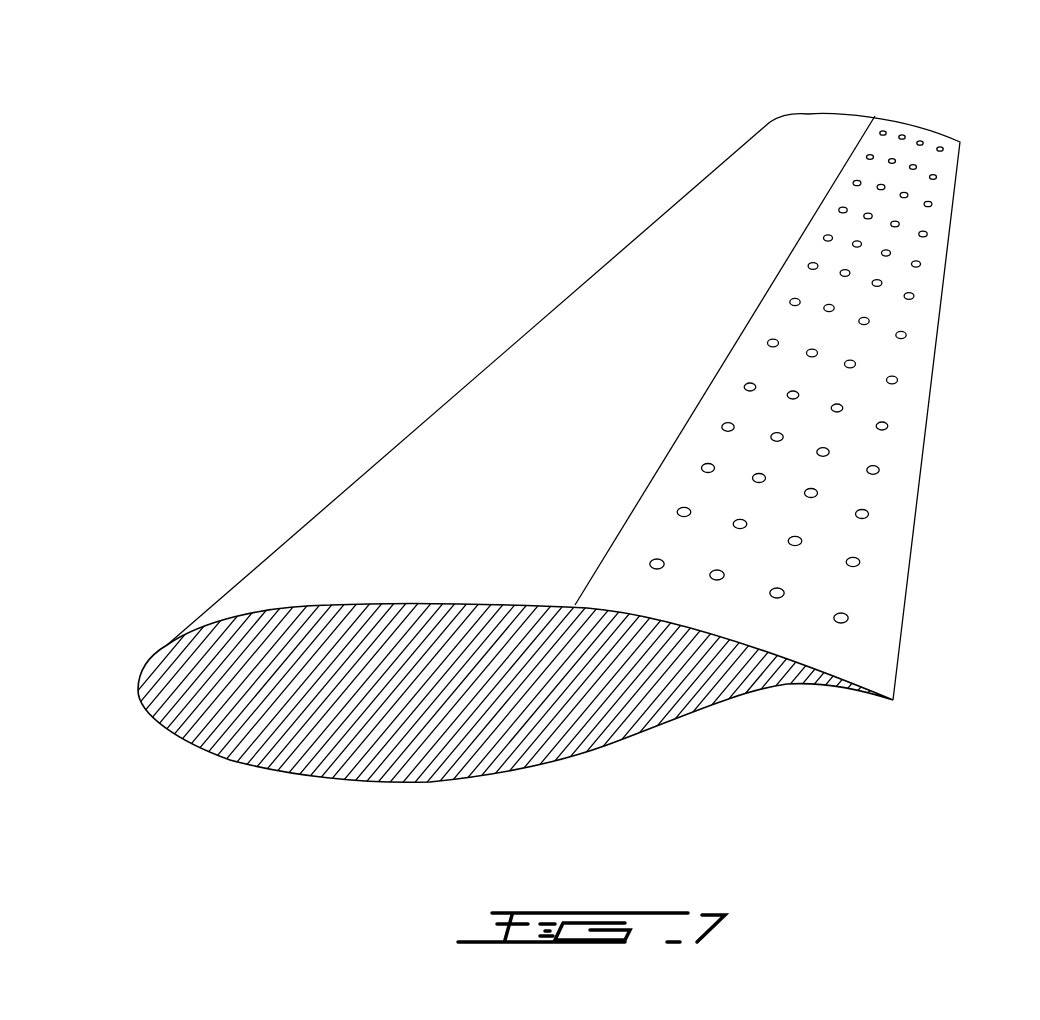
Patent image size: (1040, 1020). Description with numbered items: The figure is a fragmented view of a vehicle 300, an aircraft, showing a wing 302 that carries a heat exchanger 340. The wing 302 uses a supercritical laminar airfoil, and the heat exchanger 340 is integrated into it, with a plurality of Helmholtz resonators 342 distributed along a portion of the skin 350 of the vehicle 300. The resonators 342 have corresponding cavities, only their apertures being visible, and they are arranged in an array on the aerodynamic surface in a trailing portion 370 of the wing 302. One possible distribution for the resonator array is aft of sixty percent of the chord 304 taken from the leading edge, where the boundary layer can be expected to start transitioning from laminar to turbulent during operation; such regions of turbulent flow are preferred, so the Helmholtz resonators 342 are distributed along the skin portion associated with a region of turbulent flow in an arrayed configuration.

The vehicle 300 is at (607, 745).
The wing 302 is at (587, 360).
The chord 304 is at (603, 407).
The heat exchanger 340 is at (798, 723).
The Helmholtz resonators 342 is at (811, 493).
The skin 350 is at (793, 280).
The trailing portion 370 is at (877, 80).